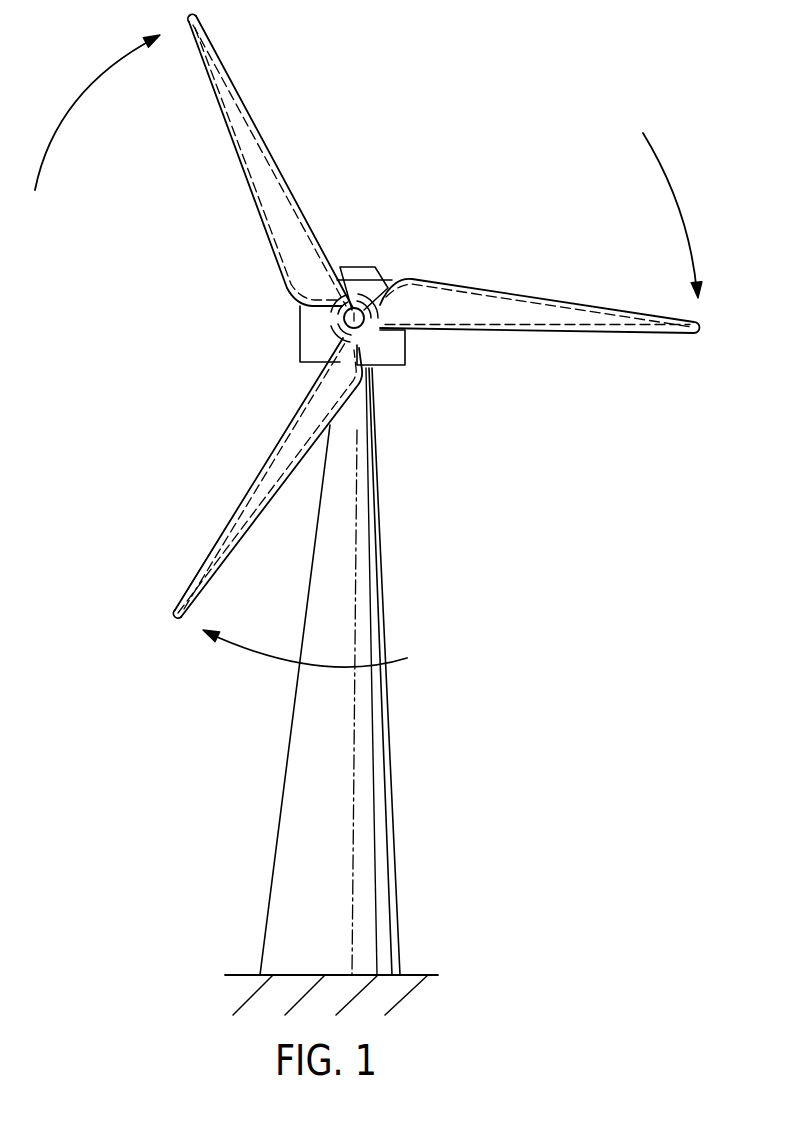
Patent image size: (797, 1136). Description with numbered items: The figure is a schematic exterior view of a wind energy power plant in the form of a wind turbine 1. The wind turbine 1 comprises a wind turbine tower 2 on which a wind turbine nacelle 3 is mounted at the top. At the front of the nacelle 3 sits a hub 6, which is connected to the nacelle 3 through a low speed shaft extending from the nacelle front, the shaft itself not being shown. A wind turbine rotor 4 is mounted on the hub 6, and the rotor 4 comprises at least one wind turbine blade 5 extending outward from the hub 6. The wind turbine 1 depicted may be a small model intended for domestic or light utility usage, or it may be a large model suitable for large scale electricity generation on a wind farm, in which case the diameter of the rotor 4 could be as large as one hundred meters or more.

The wind turbine 1 is at (436, 494).
The wind turbine tower 2 is at (387, 713).
The wind turbine nacelle 3 is at (397, 352).
The wind turbine rotor 4 is at (436, 316).
The wind turbine blade 5 is at (522, 302).
The hub 6 is at (355, 316).